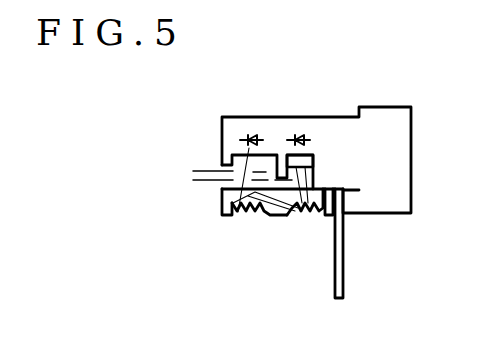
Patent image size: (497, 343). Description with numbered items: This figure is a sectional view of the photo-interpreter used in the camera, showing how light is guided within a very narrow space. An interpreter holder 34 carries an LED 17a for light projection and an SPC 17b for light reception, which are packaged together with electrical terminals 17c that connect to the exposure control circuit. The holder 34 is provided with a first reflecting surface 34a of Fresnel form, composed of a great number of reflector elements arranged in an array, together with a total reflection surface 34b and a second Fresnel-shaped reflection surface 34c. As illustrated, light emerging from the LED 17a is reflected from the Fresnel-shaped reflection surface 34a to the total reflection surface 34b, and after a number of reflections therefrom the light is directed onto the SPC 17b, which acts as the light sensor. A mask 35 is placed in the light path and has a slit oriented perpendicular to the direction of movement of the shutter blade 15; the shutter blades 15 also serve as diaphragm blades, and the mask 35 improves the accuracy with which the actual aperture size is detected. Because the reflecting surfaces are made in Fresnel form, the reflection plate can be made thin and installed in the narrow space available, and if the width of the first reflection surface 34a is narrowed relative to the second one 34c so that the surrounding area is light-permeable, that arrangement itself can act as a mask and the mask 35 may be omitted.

The shutter blade 15 is at (203, 181).
The LED 17a is at (248, 135).
The SPC 17b is at (295, 135).
The electrical terminal 17c is at (344, 268).
The interpreter holder 34 is at (403, 170).
The first reflecting surface 34a is at (252, 192).
The total reflection surface 34b is at (282, 190).
The second Fresnel-shaped reflection surface 34c is at (319, 215).
The mask 35 is at (202, 170).